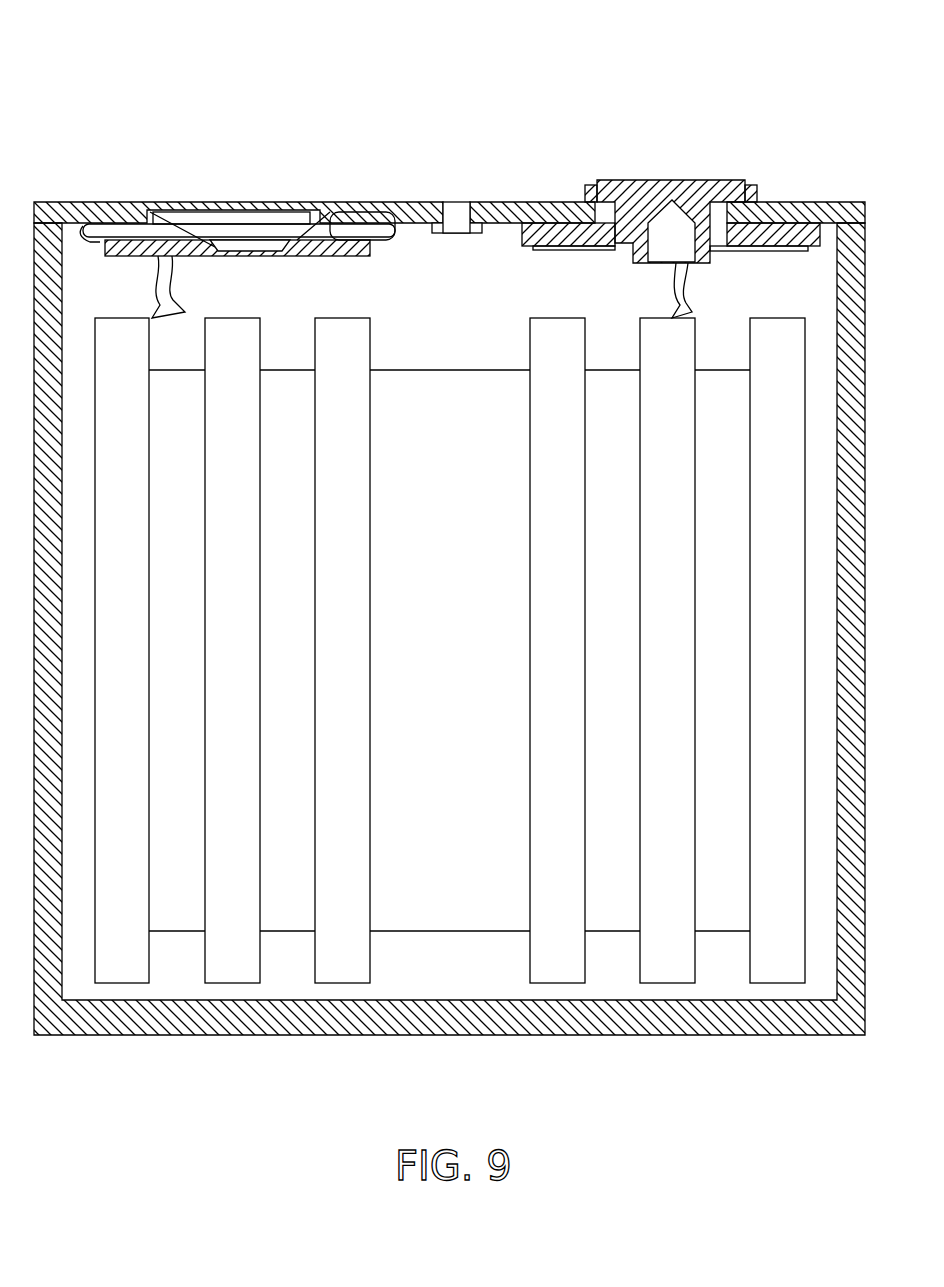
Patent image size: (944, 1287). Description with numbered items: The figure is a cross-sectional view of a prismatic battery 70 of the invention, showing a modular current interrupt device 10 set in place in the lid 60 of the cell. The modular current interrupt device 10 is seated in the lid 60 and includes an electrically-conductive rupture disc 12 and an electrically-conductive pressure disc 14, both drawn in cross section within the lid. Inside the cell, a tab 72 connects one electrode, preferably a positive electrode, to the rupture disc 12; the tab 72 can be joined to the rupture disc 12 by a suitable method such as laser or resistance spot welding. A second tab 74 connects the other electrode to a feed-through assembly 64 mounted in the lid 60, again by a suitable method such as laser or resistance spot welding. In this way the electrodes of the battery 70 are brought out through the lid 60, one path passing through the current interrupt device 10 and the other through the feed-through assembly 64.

The battery 70 is at (126, 57).
The modular current interrupt device 10 is at (176, 203).
The electrically-conductive pressure disc 14 is at (299, 212).
The electrically-conductive rupture disc 12 is at (299, 256).
The tab 72 is at (186, 272).
The lid 60 is at (553, 202).
The feed-through assembly 64 is at (653, 180).
The tab 74 is at (690, 280).